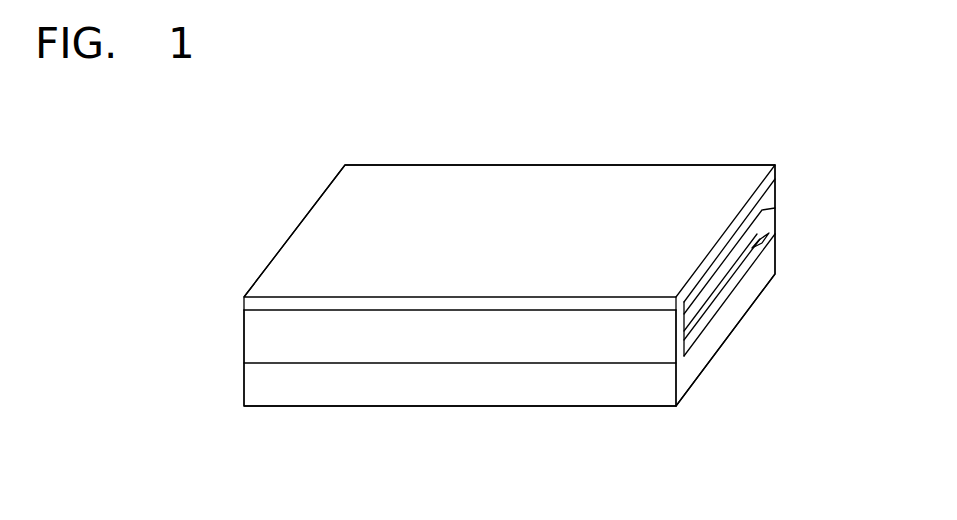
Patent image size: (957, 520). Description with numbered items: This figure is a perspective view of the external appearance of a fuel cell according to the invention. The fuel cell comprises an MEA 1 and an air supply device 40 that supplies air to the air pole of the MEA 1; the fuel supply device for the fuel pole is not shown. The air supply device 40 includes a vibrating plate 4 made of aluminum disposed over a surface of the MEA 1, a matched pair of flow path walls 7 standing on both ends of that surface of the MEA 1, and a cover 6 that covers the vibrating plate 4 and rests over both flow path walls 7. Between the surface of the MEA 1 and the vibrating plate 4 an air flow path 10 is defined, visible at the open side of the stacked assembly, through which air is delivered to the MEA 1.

The air supply device 40 is at (849, 257).
The cover 6 is at (576, 182).
The flow path walls 7 is at (413, 345).
The MEA 1 is at (515, 397).
The vibrating plate 4 is at (704, 284).
The air flow path 10 is at (759, 245).